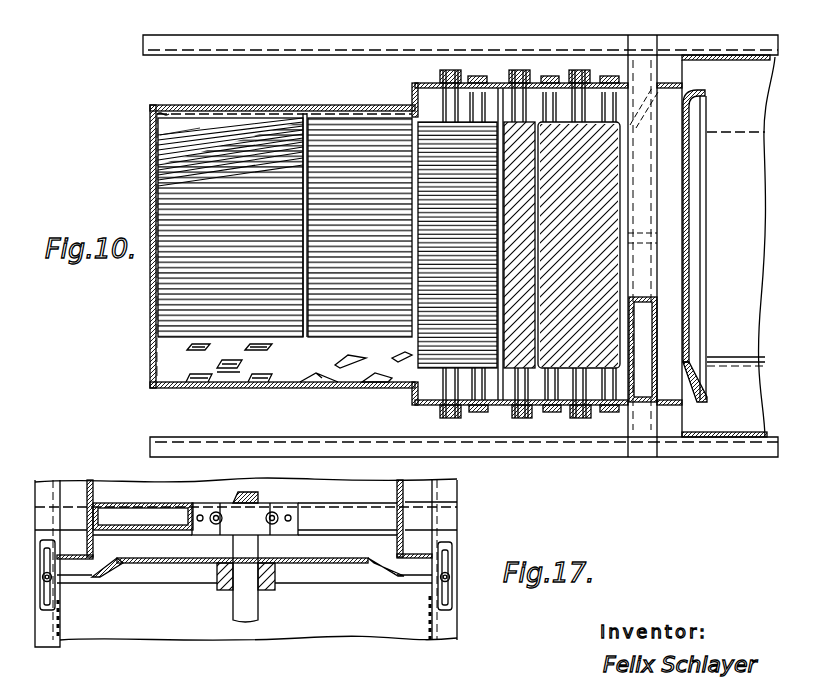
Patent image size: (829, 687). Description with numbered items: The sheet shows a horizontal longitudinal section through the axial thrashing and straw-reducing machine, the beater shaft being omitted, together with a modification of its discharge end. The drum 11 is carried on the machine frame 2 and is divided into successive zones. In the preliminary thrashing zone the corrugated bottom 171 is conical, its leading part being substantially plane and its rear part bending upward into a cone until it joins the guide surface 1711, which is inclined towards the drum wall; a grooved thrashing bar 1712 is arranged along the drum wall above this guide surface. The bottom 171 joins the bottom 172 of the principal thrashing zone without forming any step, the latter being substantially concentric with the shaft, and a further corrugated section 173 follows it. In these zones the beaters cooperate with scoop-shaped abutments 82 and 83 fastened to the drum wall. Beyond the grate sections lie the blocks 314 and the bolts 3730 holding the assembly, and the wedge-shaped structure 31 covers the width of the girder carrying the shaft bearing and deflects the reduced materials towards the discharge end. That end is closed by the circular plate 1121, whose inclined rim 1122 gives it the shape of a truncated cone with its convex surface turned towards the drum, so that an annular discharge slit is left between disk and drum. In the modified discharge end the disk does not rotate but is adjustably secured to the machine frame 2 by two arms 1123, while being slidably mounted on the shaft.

In FIG. 10, the machine frame 2 is at (705, 42).
In FIG. 17, the machine frame 2 is at (45, 638).
In FIG. 10, the drum 11 is at (267, 105).
In FIG. 10, the guide surface 1711 is at (168, 126).
In FIG. 10, the grooved thrashing bar 1712 is at (183, 119).
In FIG. 10, the corrugated bottom 171 is at (188, 157).
In FIG. 10, the bottom 172 is at (335, 143).
In FIG. 10, the third filter element 173 is at (428, 143).
In FIG. 10, the hatched block 314 is at (562, 147).
In FIG. 10, the bolts 3730 is at (598, 480).
In FIG. 10, the scoop-shaped abutment 82 is at (227, 368).
In FIG. 10, the scoop-shaped abutment 83 is at (348, 362).
In FIG. 10, the wedge-shaped structure 31 is at (645, 350).
In FIG. 10, the rim 1122 is at (704, 90).
In FIG. 10, the circular plate 1121 is at (704, 241).
In FIG. 17, the circular plate 1121 is at (165, 565).
In FIG. 17, the arm 1123 is at (410, 580).